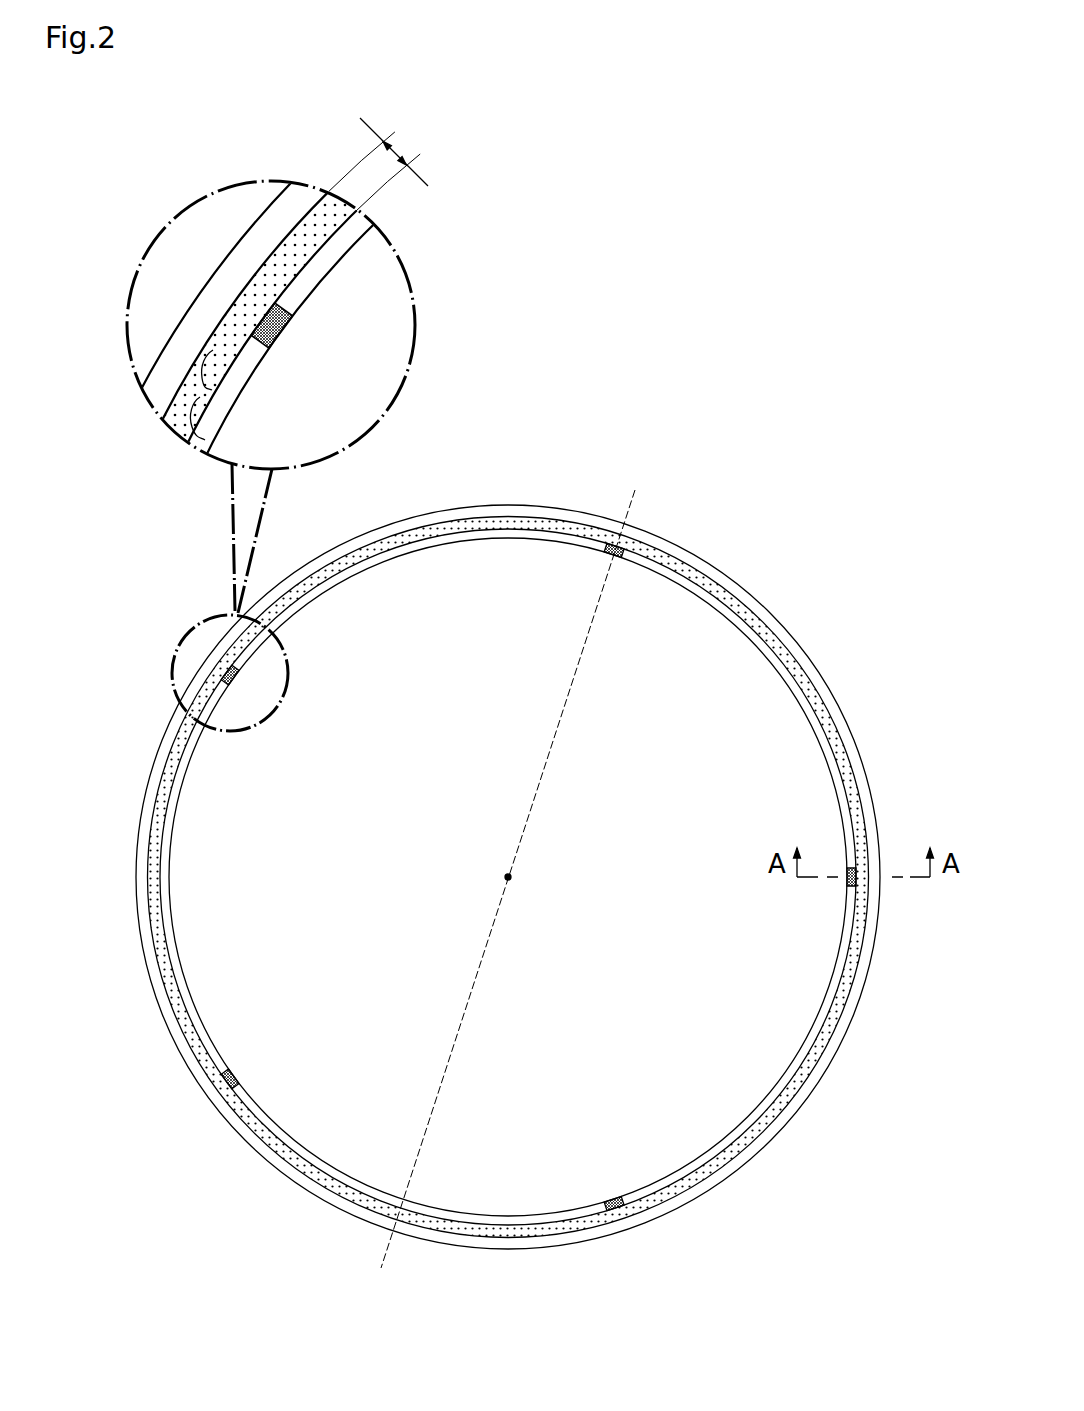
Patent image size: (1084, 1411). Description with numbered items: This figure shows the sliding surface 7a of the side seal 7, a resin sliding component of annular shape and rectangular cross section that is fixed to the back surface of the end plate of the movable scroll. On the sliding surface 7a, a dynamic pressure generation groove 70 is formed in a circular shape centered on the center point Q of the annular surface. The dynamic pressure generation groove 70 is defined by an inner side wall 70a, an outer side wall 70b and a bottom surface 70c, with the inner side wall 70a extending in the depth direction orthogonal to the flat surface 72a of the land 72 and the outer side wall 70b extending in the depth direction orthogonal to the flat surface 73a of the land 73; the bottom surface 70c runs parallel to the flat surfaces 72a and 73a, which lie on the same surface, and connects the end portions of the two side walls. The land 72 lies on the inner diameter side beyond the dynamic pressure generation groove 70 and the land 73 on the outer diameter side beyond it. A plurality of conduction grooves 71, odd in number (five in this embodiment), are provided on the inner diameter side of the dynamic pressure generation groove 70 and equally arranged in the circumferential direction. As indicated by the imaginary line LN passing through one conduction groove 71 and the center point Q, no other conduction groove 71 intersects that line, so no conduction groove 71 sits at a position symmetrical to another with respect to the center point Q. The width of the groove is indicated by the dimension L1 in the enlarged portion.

The side seal 7 is at (710, 517).
The sliding surface 7a is at (672, 580).
The dynamic pressure generation groove 70 is at (790, 632).
The inner side wall 70a is at (228, 422).
The outer side wall 70b is at (185, 373).
The bottom surface 70c is at (230, 333).
The conduction groove 71 is at (847, 905).
The land 72 is at (312, 270).
The flat surface 72a is at (243, 368).
The land 73 is at (224, 305).
The flat surface 73a is at (257, 257).
The center point Q is at (515, 877).
The imaginary line LN is at (517, 862).
The thickness of adhesive layer L1 is at (380, 164).